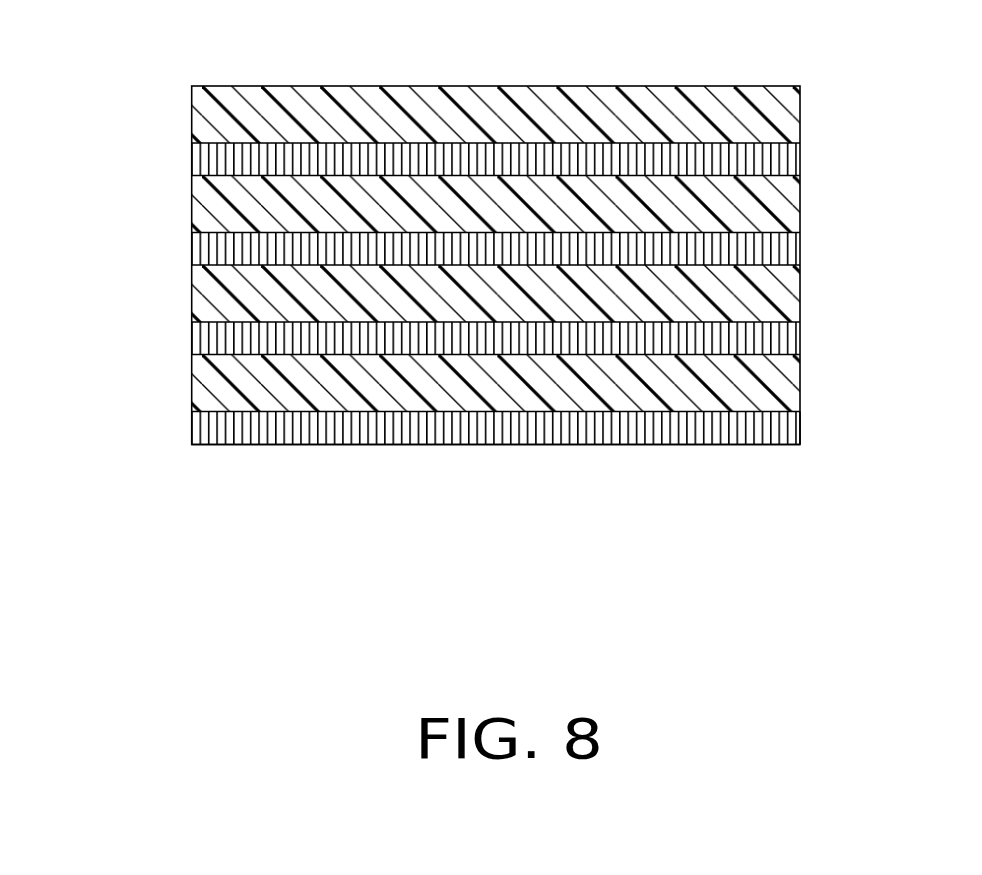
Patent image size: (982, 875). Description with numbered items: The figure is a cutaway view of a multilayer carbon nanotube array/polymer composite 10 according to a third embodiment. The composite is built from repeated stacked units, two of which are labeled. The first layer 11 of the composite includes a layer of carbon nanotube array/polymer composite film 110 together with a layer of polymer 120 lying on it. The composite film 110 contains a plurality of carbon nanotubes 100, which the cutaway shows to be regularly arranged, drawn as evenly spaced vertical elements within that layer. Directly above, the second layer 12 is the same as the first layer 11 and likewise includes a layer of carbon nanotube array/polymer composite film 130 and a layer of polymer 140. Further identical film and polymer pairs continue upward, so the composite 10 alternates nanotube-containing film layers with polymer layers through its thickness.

The multilayer carbon nanotube array/polymer composite 10 is at (440, 33).
The first layer 11 is at (421, 402).
The second layer 12 is at (415, 313).
The carbon nanotubes 100 is at (800, 427).
The carbon nanotube array/polymer composite film 110 is at (212, 425).
The layer of polymer 120 is at (220, 384).
The carbon nanotube array/polymer composite film 130 is at (217, 334).
The layer of polymer 140 is at (217, 295).